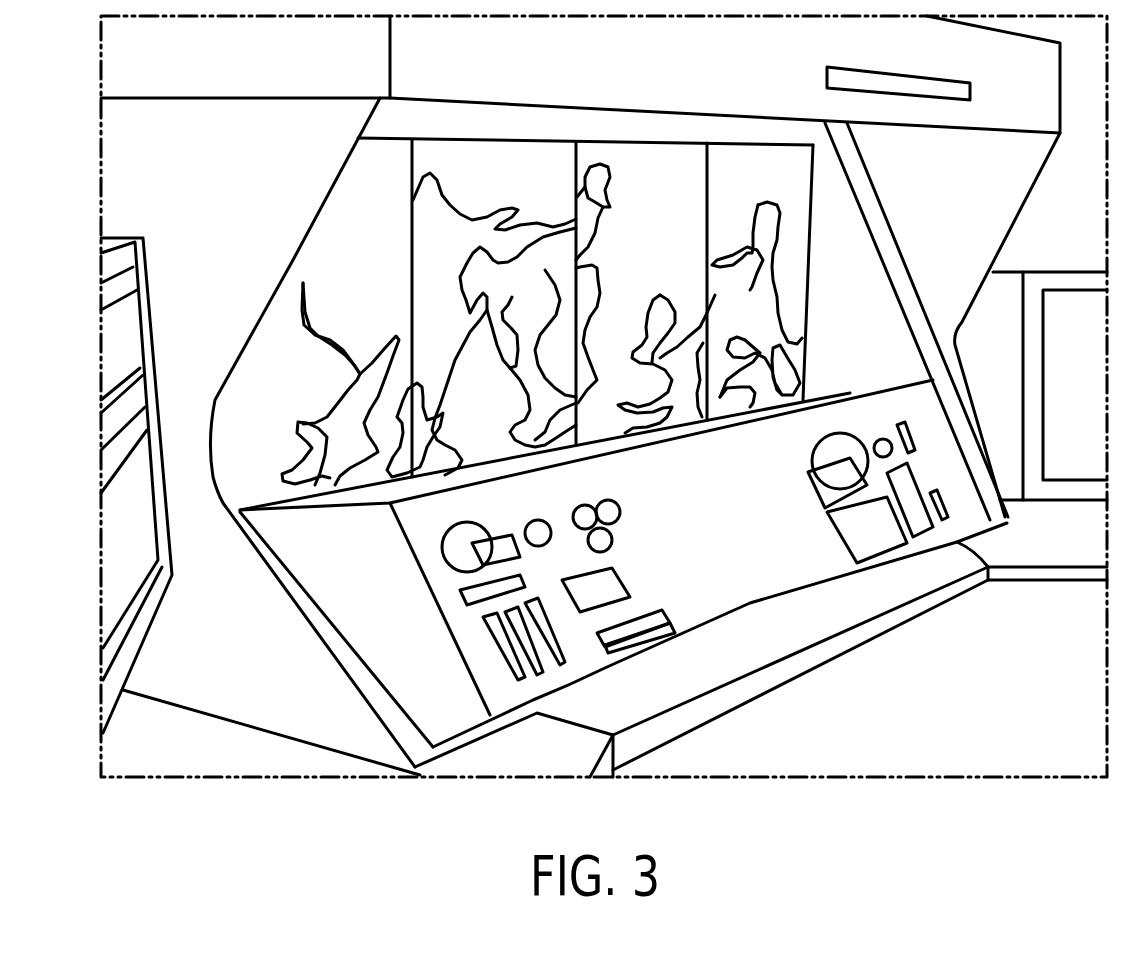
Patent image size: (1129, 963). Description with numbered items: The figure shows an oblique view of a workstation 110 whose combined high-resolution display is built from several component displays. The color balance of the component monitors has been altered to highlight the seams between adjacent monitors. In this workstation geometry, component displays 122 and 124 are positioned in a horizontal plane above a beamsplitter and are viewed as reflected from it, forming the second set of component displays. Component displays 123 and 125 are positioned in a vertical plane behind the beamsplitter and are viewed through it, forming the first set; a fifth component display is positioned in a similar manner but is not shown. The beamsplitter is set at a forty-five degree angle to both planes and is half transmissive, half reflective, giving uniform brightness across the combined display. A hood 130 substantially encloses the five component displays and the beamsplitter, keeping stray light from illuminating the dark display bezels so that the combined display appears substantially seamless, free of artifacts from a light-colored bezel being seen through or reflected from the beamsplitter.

The appliance console 110 is at (870, 313).
The component display 122 is at (328, 323).
The component display 123 is at (498, 297).
The component display 124 is at (663, 268).
The component display 125 is at (760, 253).
The hood 130 is at (267, 193).